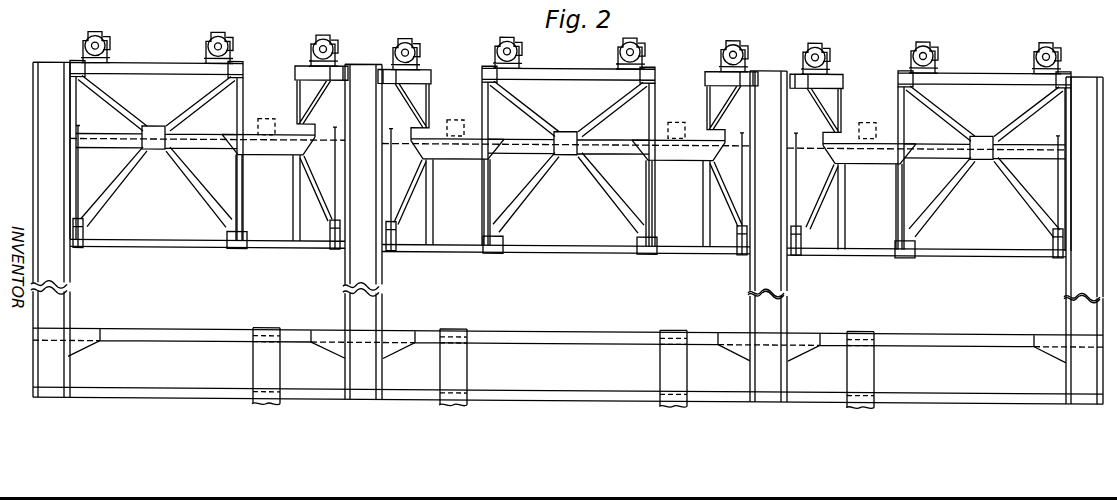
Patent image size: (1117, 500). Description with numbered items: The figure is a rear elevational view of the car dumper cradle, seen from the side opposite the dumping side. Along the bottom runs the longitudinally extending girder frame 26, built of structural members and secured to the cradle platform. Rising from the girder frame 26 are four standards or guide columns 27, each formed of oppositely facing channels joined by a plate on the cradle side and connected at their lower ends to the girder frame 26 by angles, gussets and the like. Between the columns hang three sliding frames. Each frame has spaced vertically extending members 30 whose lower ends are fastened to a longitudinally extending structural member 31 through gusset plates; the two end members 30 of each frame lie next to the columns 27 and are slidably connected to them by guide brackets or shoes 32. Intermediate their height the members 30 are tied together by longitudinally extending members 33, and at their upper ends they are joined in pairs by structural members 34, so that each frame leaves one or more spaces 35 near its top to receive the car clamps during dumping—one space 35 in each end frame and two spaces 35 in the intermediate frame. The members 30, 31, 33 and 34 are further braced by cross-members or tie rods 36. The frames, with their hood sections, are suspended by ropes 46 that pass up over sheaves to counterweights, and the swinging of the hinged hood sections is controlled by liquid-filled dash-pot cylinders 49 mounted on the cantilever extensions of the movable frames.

The girder frame 26 is at (568, 368).
The standards or guide columns 27 is at (58, 268).
The vertically extending members 30 is at (297, 190).
The longitudinally extending structural member 31 is at (205, 246).
The guide brackets or shoes 32 is at (338, 248).
The longitudinally extending members 33 is at (187, 138).
The structural members 34 is at (177, 70).
The spaces 35 is at (568, 112).
The cross-members or tie rods 36 is at (126, 176).
The ropes 46 is at (78, 169).
The cylinders 49 is at (85, 40).